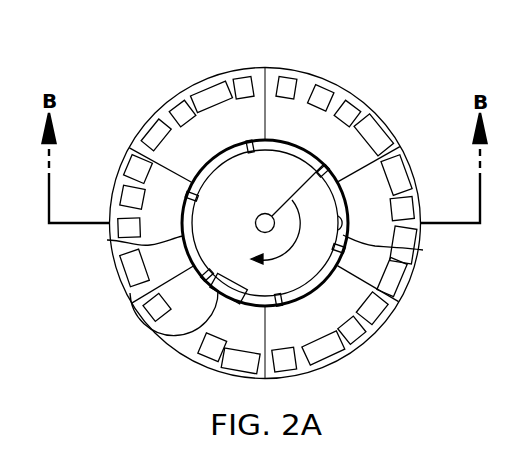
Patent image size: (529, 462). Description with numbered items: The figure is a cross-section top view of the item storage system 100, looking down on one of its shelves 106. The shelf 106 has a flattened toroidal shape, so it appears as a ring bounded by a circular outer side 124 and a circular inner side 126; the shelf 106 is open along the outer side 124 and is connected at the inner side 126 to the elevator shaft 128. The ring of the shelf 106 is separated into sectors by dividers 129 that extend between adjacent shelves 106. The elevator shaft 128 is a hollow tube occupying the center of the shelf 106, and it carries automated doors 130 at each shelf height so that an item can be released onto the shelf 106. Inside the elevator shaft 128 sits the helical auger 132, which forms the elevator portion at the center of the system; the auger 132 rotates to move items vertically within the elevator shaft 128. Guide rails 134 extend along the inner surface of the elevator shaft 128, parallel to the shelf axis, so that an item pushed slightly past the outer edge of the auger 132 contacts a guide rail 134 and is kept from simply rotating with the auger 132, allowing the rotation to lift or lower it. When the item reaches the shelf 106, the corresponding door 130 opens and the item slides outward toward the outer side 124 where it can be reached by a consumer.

The item storage system 100 is at (265, 199).
The shelves 106 is at (323, 122).
The outer side 124 is at (277, 69).
The inner side 126 is at (322, 166).
The elevator shaft 128 is at (423, 250).
The dividers 129 is at (160, 160).
The automated doors 130 is at (107, 240).
The helical auger 132 is at (275, 192).
The guide rails 134 is at (193, 202).